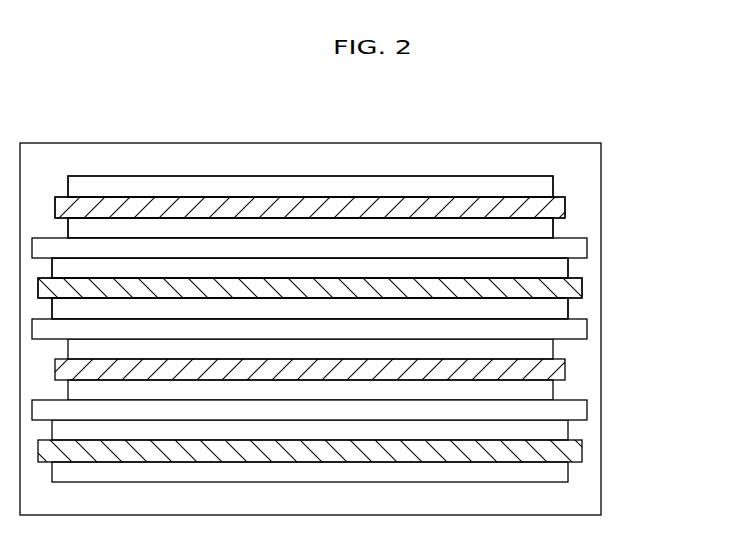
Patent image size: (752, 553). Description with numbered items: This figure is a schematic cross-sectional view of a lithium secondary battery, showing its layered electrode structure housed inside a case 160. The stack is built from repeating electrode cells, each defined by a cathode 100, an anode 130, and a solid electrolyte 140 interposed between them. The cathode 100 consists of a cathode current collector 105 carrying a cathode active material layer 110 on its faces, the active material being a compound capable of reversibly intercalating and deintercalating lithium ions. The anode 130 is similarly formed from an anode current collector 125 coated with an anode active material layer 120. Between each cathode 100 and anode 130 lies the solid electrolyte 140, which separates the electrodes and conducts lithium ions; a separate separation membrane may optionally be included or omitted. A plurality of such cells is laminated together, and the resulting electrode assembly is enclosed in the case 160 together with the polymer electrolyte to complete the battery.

The cathode 100 is at (676, 178).
The cathode active material layer 110 is at (553, 183).
The cathode current collector 105 is at (565, 205).
The anode 130 is at (676, 262).
The anode active material layer 120 is at (568, 265).
The anode current collector 125 is at (582, 289).
The solid electrolyte 140 is at (480, 243).
The case 160 is at (601, 452).